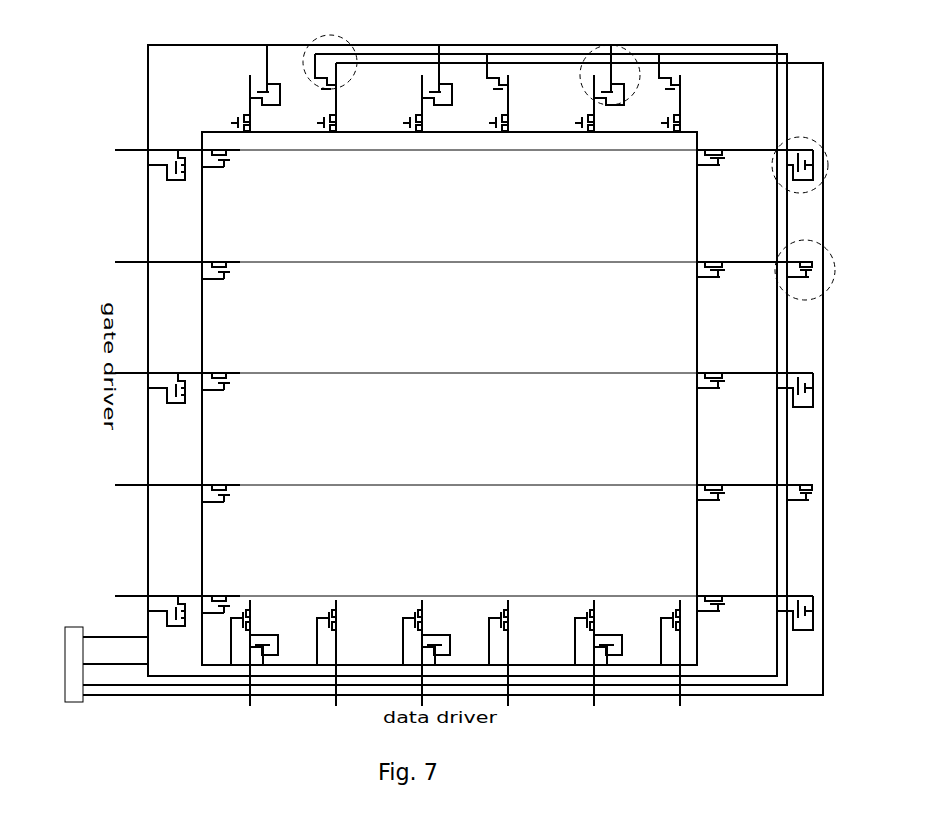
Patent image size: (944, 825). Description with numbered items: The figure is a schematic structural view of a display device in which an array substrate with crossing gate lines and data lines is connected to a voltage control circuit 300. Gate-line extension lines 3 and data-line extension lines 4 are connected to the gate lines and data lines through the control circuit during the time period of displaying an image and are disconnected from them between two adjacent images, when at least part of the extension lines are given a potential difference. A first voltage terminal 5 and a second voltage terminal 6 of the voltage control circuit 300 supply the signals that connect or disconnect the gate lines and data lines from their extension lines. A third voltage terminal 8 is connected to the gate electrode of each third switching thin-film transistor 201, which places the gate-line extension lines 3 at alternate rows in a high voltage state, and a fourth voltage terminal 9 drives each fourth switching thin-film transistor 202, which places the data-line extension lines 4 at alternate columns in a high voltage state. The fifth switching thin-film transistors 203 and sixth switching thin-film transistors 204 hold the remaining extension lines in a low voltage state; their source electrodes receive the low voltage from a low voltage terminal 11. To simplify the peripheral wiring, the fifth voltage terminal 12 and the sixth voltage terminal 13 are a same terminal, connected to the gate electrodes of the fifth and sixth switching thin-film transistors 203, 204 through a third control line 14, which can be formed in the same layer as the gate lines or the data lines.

The gate-line extension line 3 is at (740, 265).
The data-line extension line 4 is at (342, 100).
The third control line 14 is at (788, 548).
The voltage control circuit 300 is at (65, 652).
The third voltage terminal 8 is at (115, 629).
The fourth voltage terminal 9 is at (115, 629).
The first voltage terminal 5 is at (430, 661).
The second voltage terminal 6 is at (430, 661).
The fifth voltage terminal 12 is at (435, 370).
The sixth voltage terminal 13 is at (435, 370).
The low voltage terminal 11 is at (453, 387).
The third switching thin-film transistor 201 is at (812, 190).
The fourth switching thin-film transistor 202 is at (628, 48).
The fifth switching thin-film transistor 203 is at (816, 296).
The sixth switching thin-film transistor 204 is at (347, 40).